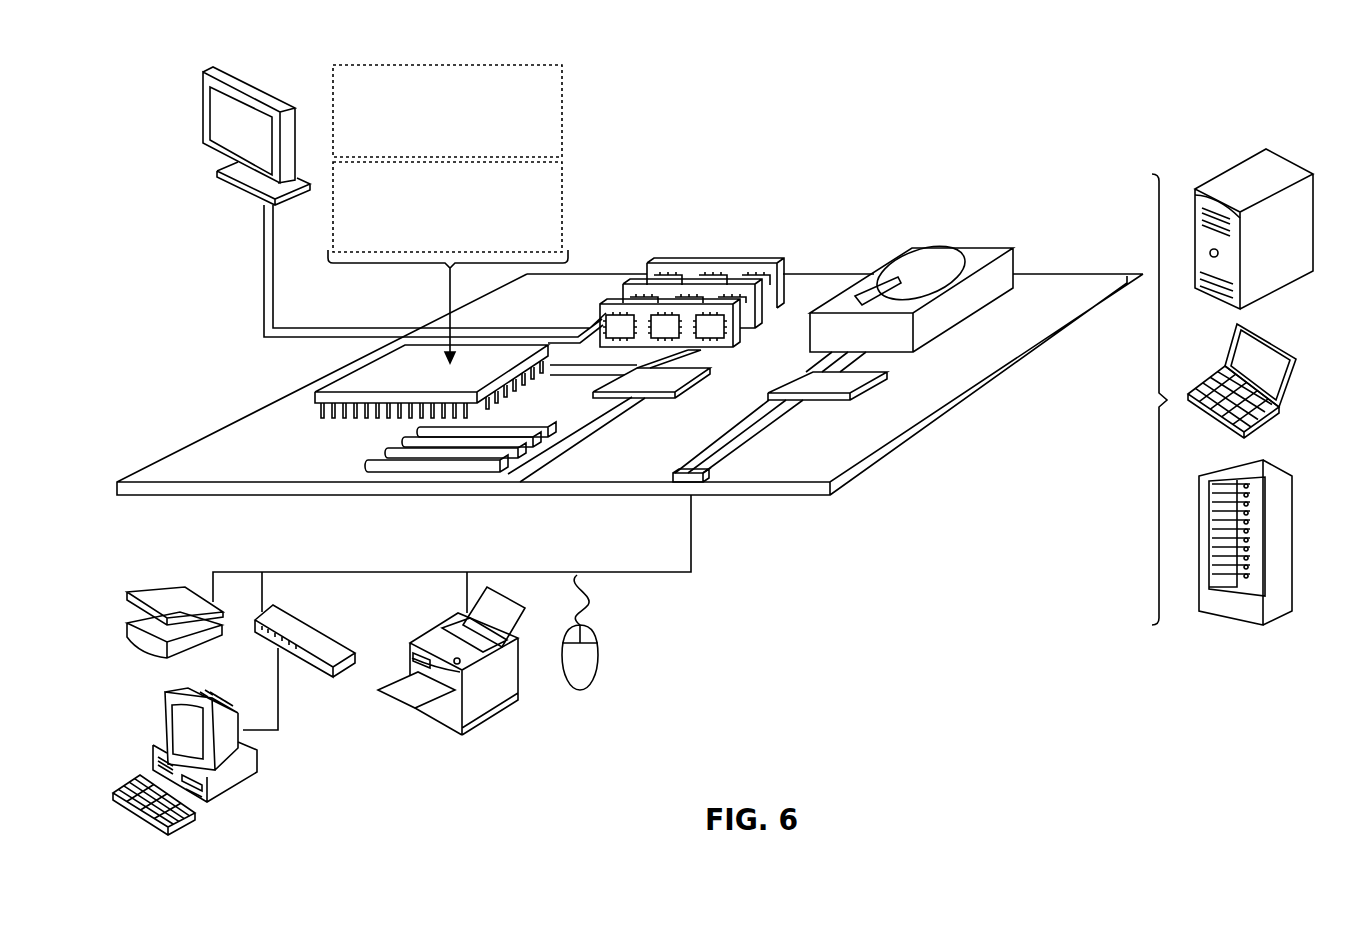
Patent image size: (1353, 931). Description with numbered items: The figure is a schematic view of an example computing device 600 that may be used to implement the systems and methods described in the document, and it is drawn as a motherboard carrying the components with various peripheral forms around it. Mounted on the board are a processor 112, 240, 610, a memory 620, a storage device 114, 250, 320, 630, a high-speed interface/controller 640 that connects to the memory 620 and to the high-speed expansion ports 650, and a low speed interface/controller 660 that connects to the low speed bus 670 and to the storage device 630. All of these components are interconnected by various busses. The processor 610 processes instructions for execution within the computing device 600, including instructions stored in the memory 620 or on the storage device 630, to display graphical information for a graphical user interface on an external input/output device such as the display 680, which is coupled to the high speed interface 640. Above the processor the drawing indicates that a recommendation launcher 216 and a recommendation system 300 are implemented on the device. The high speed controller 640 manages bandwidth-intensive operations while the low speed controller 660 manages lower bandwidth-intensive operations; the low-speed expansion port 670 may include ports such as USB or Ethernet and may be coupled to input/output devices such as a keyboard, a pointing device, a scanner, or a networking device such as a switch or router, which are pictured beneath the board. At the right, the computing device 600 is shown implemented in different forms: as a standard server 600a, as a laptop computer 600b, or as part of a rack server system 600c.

The computing device 600 is at (787, 127).
The standard server 600a is at (1306, 146).
The laptop computer 600b is at (1292, 330).
The rack server system 600c is at (1320, 540).
The computing resources 112 is at (355, 381).
The processor 240 is at (355, 381).
The processor 610 is at (314, 393).
The storage resources 114 is at (936, 270).
The storage device 250 is at (936, 270).
The storage device 320 is at (936, 270).
The storage device 630 is at (967, 212).
The recommendation launcher 216 is at (447, 111).
The recommendation system 300 is at (447, 207).
The memory 620 is at (755, 263).
The high-speed interface/controller 640 is at (655, 398).
The high-speed expansion ports 650 is at (368, 463).
The low speed interface/controller 660 is at (817, 380).
The low speed bus 670 is at (702, 486).
The display 680 is at (203, 118).